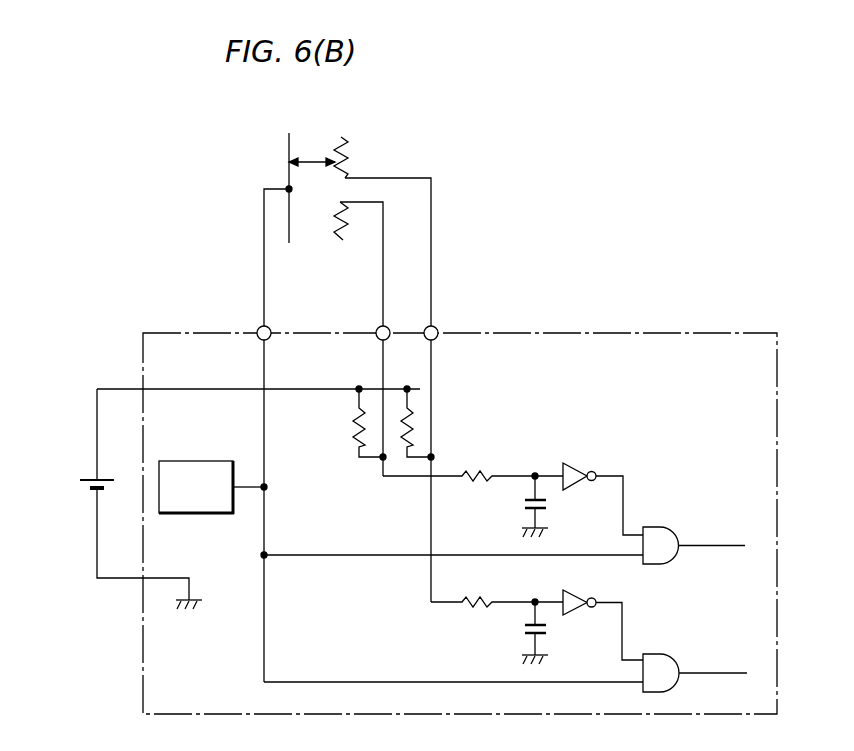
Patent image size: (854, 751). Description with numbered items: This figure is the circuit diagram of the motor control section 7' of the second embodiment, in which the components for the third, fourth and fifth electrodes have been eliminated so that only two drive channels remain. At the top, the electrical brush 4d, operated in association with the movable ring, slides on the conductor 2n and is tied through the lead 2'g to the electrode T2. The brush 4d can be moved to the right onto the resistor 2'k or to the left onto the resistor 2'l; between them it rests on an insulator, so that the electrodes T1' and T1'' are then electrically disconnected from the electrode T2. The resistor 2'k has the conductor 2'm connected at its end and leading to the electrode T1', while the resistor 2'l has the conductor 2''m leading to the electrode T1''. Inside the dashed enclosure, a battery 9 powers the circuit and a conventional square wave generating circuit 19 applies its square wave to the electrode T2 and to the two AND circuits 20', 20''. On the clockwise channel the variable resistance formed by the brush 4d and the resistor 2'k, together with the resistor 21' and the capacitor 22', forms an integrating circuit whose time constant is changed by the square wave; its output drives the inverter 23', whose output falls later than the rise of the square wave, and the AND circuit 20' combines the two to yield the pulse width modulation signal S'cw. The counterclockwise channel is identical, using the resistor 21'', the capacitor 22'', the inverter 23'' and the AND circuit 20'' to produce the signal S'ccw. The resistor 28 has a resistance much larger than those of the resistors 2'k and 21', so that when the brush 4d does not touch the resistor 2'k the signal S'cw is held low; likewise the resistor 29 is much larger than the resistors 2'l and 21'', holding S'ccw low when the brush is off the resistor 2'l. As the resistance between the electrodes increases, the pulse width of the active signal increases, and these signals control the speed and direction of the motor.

The conductor of the electrical brush 2n is at (288, 142).
The electrical brush 4d is at (312, 158).
The resistor 2'k is at (358, 143).
The conductor 2'm is at (388, 230).
The brush conductor lead 2'g is at (311, 236).
The resistor 2'l is at (336, 251).
The conductor 2''m is at (361, 264).
The electrode T2 is at (258, 327).
The electrode T1'' is at (402, 318).
The electrode T1' is at (450, 318).
The motor control section 7' is at (460, 493).
The battery 9 is at (93, 489).
The square wave generating circuit 19 is at (217, 461).
The resistor 29 is at (356, 428).
The resistor 28 is at (411, 428).
The resistor 21'' is at (473, 458).
The capacitor 22'' is at (513, 505).
The inverter 23'' is at (603, 483).
The AND circuit 20'' is at (694, 529).
The pulse width modulation signal S'ccw is at (721, 529).
The resistor 21' is at (497, 588).
The capacitor 22' is at (509, 631).
The inverter 23' is at (603, 614).
The AND circuit 20' is at (695, 658).
The pulse width modulation signal S'cw is at (716, 653).